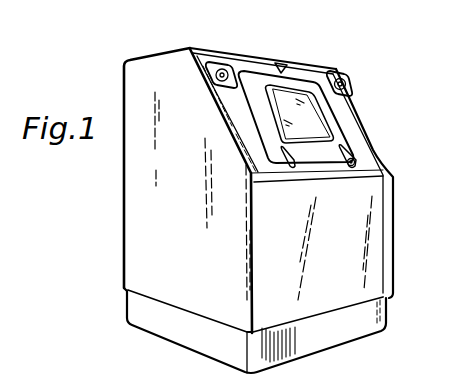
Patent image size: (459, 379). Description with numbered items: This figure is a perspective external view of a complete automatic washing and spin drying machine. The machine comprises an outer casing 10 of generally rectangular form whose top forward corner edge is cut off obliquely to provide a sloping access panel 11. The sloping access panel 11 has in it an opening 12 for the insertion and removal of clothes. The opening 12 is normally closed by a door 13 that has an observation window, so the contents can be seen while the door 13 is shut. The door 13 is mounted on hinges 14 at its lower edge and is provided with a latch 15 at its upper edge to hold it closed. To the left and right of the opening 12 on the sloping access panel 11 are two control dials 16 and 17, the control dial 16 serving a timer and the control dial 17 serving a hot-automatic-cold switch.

The outer casing 10 is at (348, 255).
The sloping access panel 11 is at (362, 151).
The opening 12 is at (270, 150).
The door 13 is at (308, 123).
The hinges 14 is at (345, 166).
The latch 15 is at (283, 62).
The control dial 16 is at (215, 65).
The control dial 17 is at (334, 69).